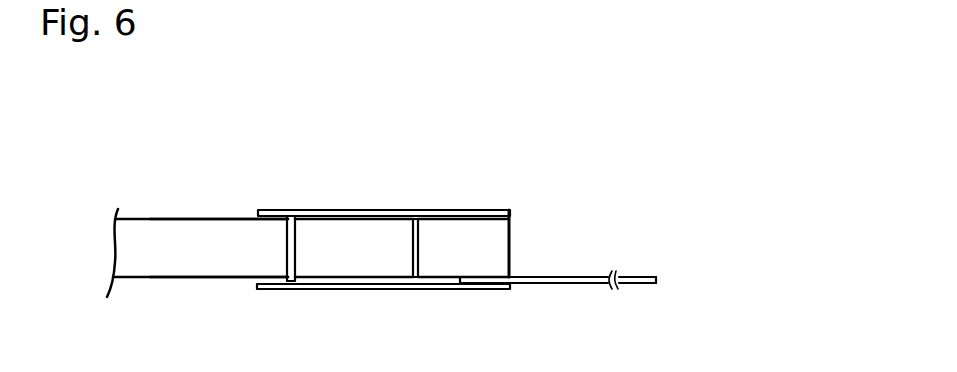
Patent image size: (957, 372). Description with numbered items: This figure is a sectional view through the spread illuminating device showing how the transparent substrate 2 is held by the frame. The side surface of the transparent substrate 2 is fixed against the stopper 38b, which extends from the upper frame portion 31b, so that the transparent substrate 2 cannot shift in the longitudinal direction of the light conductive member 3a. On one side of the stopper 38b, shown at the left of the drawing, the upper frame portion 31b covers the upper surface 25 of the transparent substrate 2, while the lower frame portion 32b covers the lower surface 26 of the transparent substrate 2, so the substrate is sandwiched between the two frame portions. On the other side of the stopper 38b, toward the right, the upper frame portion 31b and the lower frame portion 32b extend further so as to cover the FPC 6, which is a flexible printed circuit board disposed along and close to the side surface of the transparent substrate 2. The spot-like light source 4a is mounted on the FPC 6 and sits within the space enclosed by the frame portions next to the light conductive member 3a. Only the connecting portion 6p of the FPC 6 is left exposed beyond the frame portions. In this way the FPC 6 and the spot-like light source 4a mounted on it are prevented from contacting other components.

The transparent substrate 2 is at (175, 218).
The upper surface 25 is at (228, 218).
The lower surface 26 is at (233, 278).
The upper frame portion 31b is at (474, 210).
The lower frame portion 32b is at (323, 283).
The stopper 38b is at (296, 253).
The light conductive member 3a is at (388, 243).
The spot-like light source 4a is at (500, 243).
The FPC (flexible printed circuit board) 6 is at (463, 290).
The connecting portion 6p is at (643, 287).